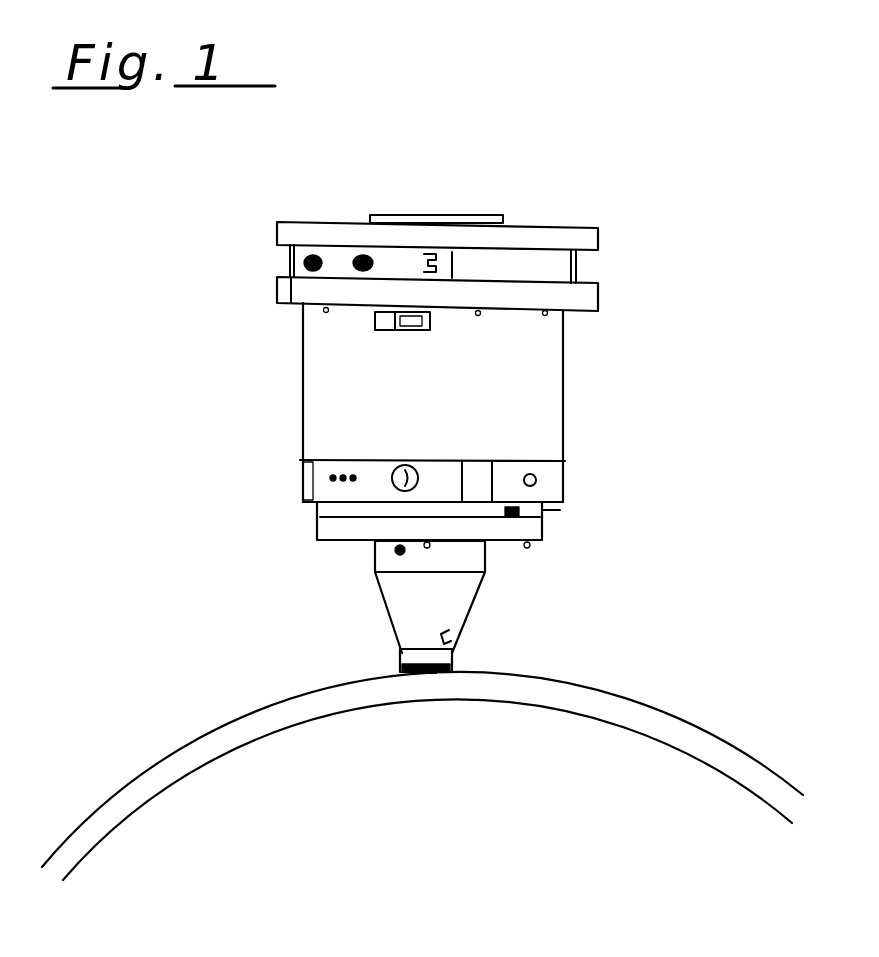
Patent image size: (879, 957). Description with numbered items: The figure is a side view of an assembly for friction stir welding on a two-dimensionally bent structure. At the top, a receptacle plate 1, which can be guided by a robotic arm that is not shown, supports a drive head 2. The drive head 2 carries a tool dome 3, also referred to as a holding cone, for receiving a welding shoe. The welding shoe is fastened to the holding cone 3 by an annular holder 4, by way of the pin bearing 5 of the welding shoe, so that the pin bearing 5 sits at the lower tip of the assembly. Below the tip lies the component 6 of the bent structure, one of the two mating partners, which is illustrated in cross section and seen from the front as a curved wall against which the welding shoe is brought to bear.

The receptacle plate 1 is at (483, 216).
The drive head 2 is at (505, 373).
The tool dome 3 is at (455, 597).
The annular holder 4 is at (410, 657).
The pin bearing 5 is at (428, 673).
The component of the bent structure 6 is at (353, 700).